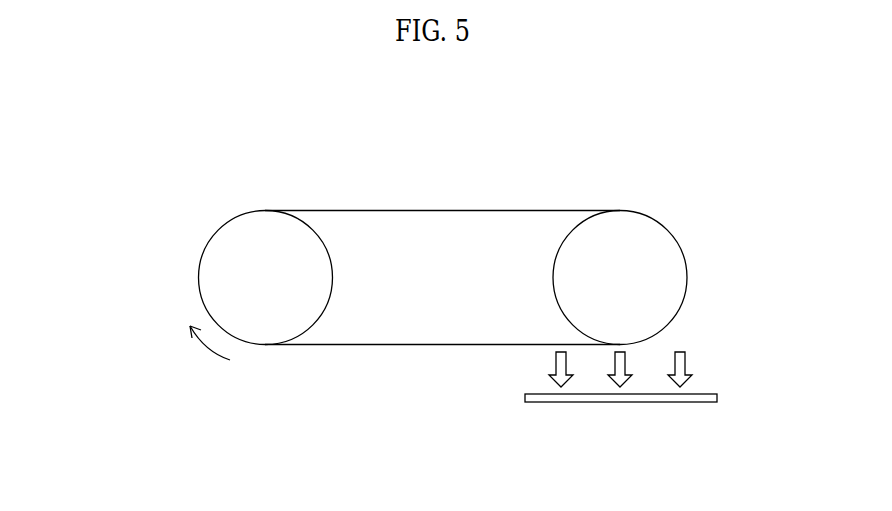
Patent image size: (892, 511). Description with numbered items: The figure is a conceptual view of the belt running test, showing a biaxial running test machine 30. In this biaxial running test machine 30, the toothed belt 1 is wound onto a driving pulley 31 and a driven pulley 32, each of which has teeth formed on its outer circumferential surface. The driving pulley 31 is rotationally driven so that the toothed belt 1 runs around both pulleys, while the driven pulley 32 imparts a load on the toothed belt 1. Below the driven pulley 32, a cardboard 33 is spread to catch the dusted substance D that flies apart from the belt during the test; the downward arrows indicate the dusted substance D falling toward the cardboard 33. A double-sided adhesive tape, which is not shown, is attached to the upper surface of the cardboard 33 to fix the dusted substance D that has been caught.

The biaxial running test machine 30 is at (373, 188).
The toothed belt 1 is at (467, 210).
The driving pulley 31 is at (212, 275).
The driven pulley 32 is at (675, 275).
The cardboard 33 is at (550, 402).
The dusted substance D is at (685, 363).